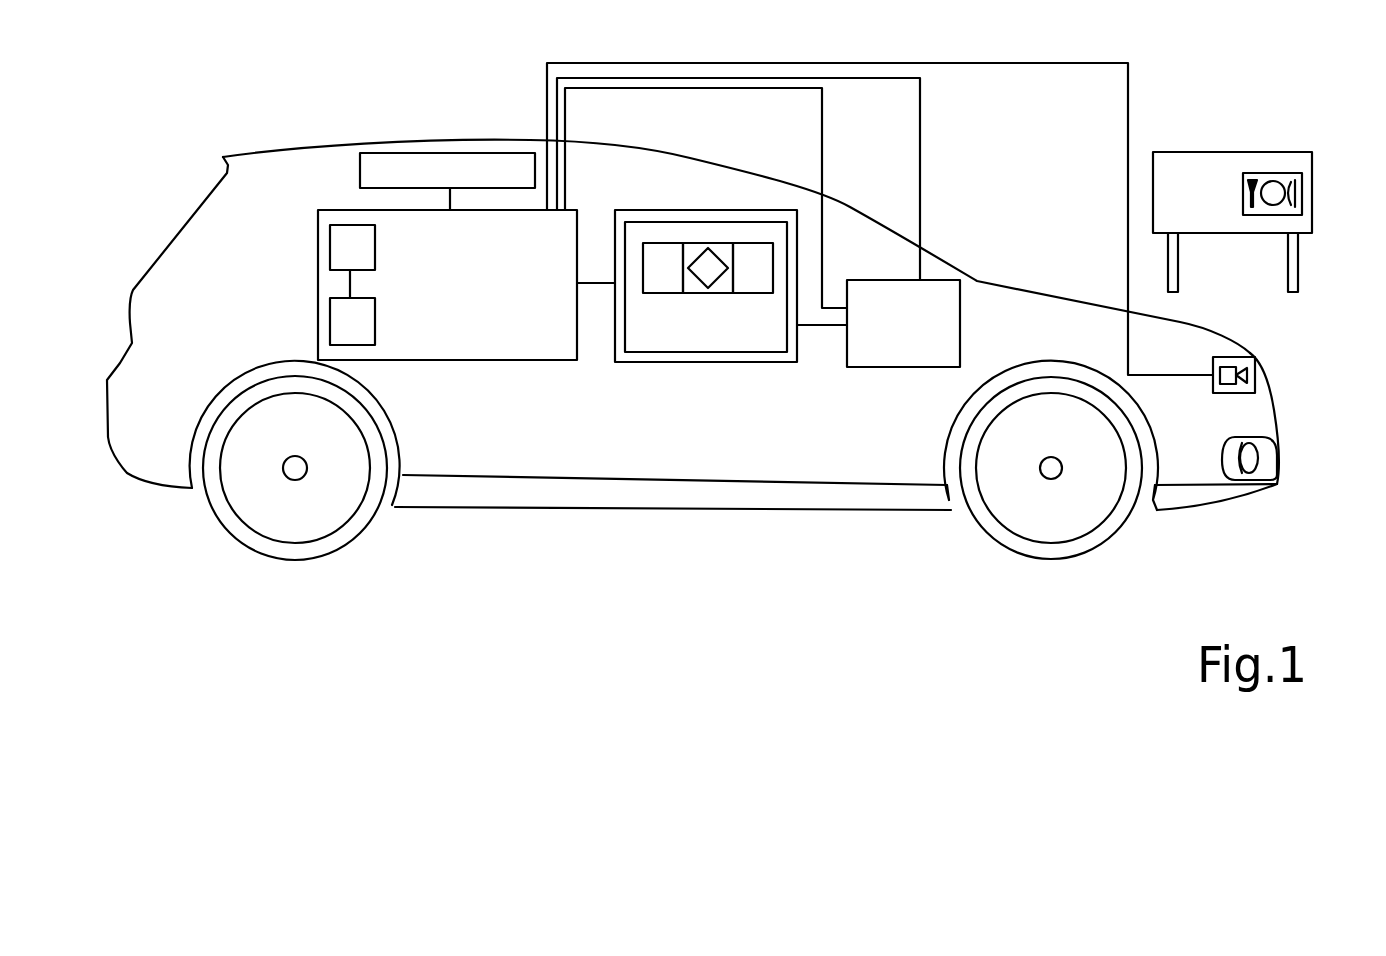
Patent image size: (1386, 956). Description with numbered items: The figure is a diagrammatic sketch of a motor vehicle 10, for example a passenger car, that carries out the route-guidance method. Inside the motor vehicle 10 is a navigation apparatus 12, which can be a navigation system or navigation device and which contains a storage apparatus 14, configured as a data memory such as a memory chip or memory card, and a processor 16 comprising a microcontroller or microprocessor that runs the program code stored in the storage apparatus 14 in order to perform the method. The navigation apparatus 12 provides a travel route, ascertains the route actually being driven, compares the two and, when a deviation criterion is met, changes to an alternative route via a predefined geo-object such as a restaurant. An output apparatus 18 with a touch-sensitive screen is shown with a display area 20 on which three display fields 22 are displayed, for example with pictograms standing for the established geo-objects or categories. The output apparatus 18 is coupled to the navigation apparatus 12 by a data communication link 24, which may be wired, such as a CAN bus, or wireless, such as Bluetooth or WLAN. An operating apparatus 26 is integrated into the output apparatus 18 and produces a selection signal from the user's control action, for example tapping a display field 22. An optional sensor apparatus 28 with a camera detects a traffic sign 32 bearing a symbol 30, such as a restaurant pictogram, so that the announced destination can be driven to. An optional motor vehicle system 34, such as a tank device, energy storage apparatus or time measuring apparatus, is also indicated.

The motor vehicle 10 is at (1277, 420).
The navigation apparatus 12 is at (498, 360).
The storage apparatus 14 is at (318, 330).
The processor 16 is at (318, 248).
The output apparatus 18 is at (718, 362).
The display area 20 is at (655, 362).
The display field 22 is at (658, 243).
The data communication link 24 is at (450, 198).
The operating apparatus 26 is at (895, 367).
The sensor apparatus 28 is at (1215, 395).
The symbol 30 is at (1268, 173).
The traffic sign 32 is at (1197, 152).
The motor vehicle system 34 is at (404, 153).